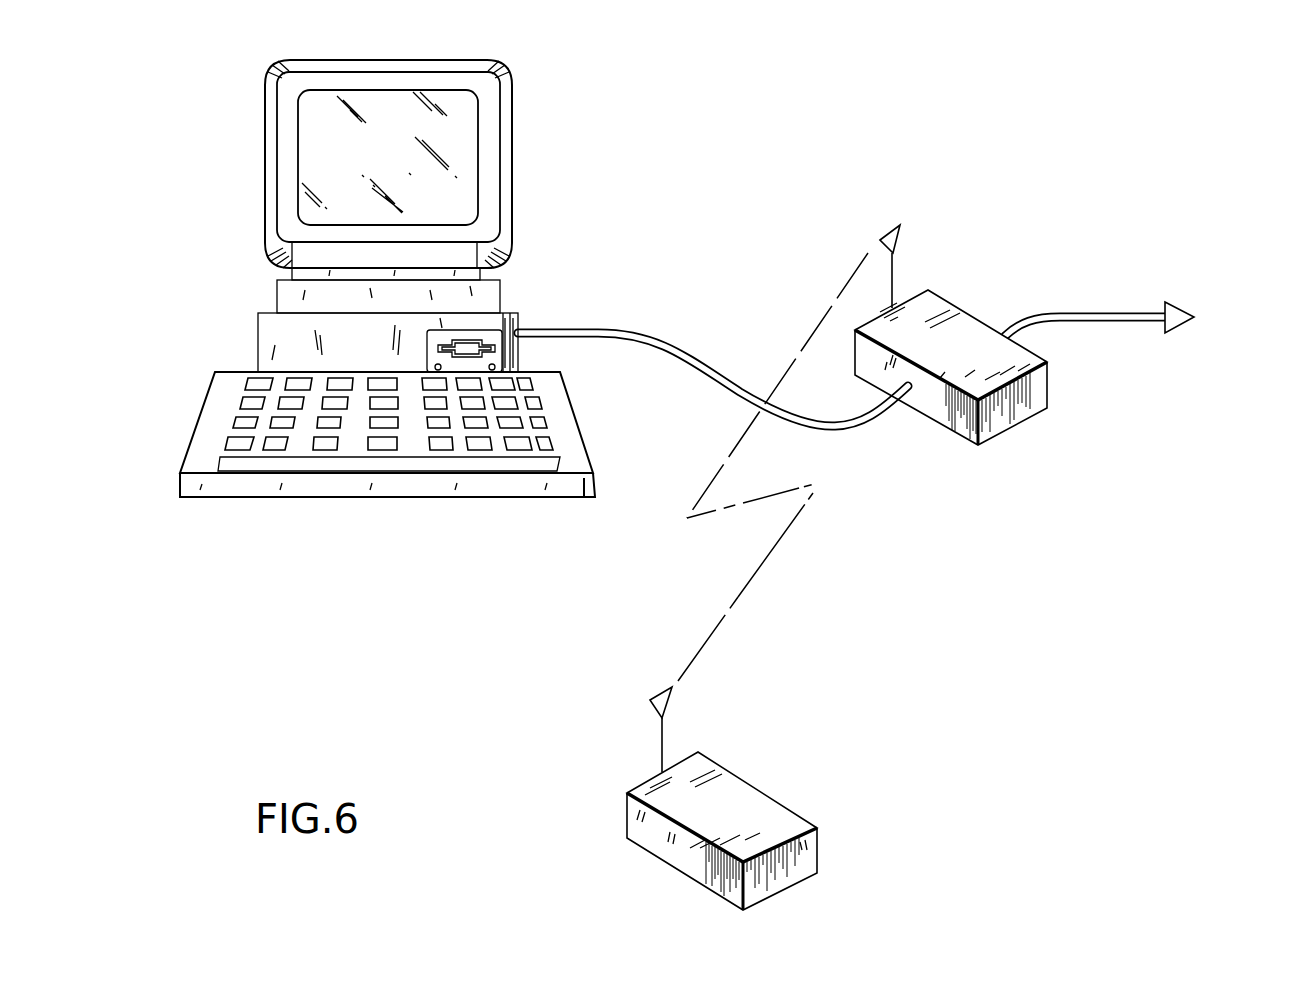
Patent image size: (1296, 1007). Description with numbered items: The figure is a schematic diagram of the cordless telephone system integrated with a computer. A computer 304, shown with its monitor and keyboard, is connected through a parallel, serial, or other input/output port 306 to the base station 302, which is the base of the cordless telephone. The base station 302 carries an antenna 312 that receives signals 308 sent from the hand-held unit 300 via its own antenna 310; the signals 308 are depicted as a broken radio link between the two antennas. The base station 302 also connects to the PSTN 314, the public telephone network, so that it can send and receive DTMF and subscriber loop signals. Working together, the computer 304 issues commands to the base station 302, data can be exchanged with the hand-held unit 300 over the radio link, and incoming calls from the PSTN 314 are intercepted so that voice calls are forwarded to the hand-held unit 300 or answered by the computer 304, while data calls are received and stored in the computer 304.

The hand-held unit 300 is at (795, 863).
The base station 302 is at (1033, 403).
The computer 304 is at (258, 358).
The input/output port 306 is at (717, 322).
The signals 308 is at (740, 596).
The antenna 310 is at (675, 703).
The antenna 312 is at (900, 238).
The PSTN 314 is at (1058, 313).